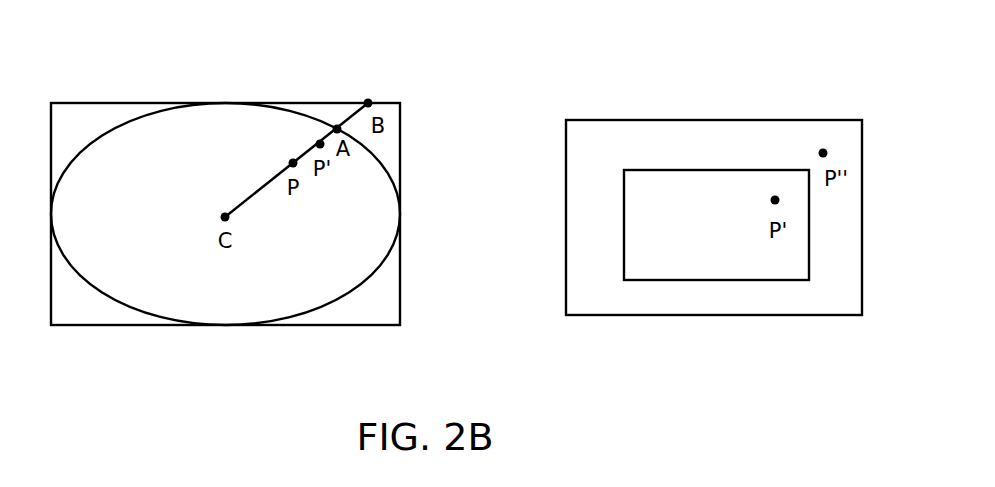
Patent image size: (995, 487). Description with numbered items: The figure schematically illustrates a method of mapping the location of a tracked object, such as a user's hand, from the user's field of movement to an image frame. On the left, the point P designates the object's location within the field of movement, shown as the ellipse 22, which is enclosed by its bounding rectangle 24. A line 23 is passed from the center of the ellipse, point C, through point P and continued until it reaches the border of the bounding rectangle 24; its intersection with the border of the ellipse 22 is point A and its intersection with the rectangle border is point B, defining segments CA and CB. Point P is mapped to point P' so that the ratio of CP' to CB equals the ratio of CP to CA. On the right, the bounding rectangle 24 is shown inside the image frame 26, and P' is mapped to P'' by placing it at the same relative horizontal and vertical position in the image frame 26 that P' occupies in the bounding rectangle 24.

The ellipse 22 is at (387, 168).
The line 23 is at (258, 191).
The bounding rectangle 24 is at (82, 103).
The image frame 26 is at (764, 119).